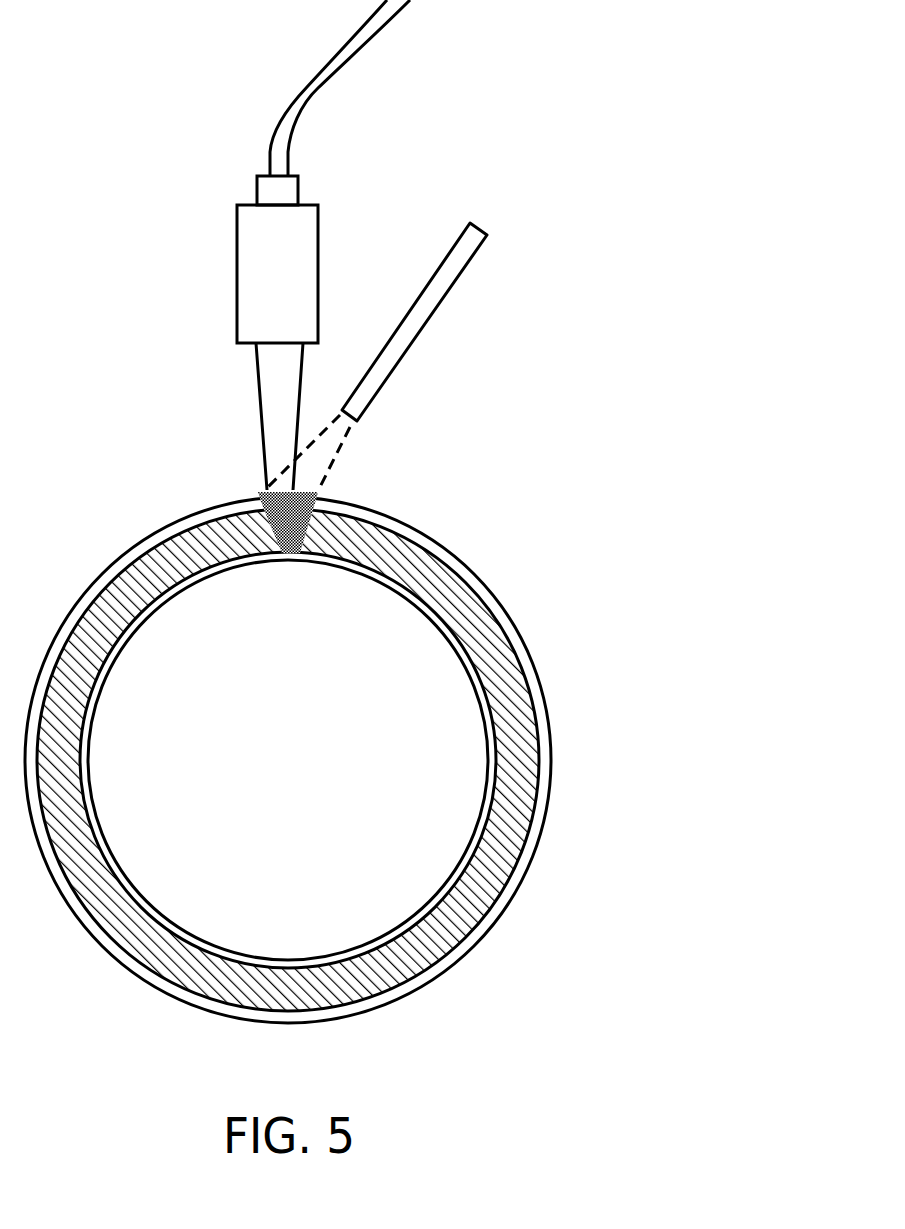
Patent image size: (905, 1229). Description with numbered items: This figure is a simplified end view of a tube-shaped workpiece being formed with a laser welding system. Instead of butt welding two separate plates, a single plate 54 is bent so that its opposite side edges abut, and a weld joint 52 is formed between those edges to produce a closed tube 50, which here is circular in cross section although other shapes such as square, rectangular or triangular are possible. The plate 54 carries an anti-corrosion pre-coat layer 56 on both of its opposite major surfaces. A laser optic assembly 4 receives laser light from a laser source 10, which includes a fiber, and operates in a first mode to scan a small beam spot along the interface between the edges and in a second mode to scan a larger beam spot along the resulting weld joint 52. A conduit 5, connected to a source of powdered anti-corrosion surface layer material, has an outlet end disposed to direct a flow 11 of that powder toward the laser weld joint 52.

The laser optic assembly 4 is at (248, 273).
The conduit 5 is at (445, 283).
The laser source 10 is at (303, 100).
The flow of powdered anti-corrosion surface layer material 11 is at (320, 464).
The tube 50 is at (542, 545).
The weld joint 52 is at (282, 530).
The plate 54 is at (520, 737).
The anti-corrosion pre-coat layer 56 is at (525, 658).